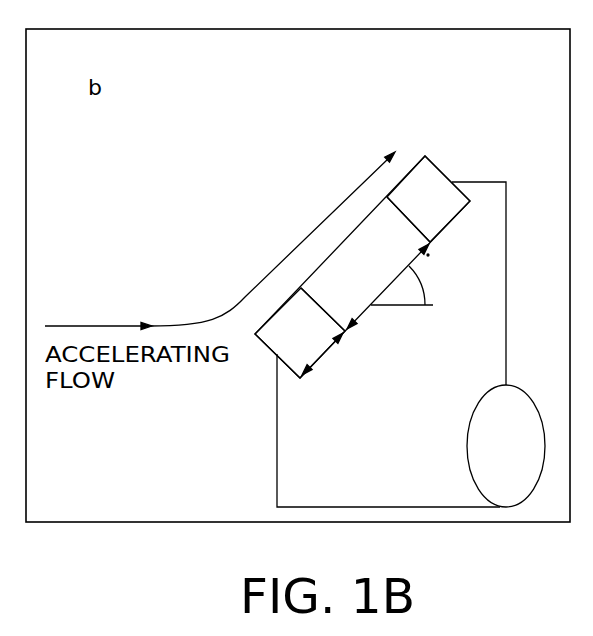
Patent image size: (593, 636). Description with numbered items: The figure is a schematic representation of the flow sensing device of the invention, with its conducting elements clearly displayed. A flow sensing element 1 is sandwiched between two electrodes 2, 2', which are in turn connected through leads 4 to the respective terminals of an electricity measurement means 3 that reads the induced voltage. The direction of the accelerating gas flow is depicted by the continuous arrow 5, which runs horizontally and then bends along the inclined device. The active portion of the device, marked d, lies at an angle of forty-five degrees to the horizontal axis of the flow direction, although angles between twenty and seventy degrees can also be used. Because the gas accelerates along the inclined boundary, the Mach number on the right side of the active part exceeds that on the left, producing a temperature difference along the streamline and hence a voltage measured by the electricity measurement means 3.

The flow sensing element 1 is at (348, 231).
The electrode 2 is at (435, 191).
The electrode 2' is at (284, 345).
The electricity measurement means 3 is at (467, 445).
The leads 4 is at (506, 285).
The flow streamline 5 is at (259, 289).